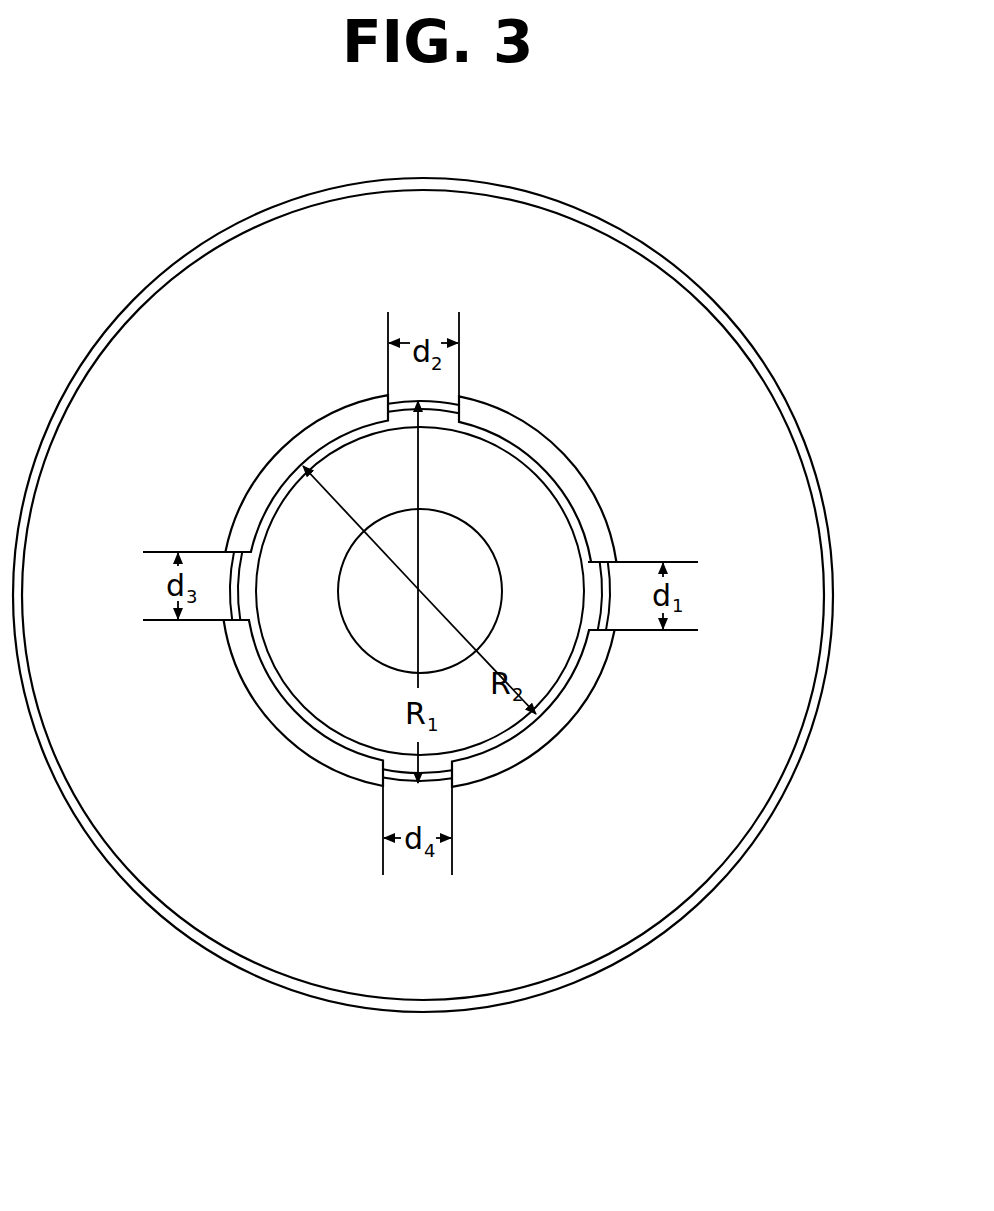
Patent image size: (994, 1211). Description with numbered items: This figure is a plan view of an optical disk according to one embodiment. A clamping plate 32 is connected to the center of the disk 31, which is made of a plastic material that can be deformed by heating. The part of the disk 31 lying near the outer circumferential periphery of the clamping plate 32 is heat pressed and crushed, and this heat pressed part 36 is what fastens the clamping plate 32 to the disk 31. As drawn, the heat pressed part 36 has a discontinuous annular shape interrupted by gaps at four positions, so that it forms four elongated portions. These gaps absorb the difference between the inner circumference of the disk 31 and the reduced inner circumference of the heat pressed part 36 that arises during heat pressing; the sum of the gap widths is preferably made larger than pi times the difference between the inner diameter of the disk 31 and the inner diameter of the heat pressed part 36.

The disk 31 is at (667, 343).
The clamping plate 32 is at (550, 523).
The heat pressed part 36 is at (266, 485).